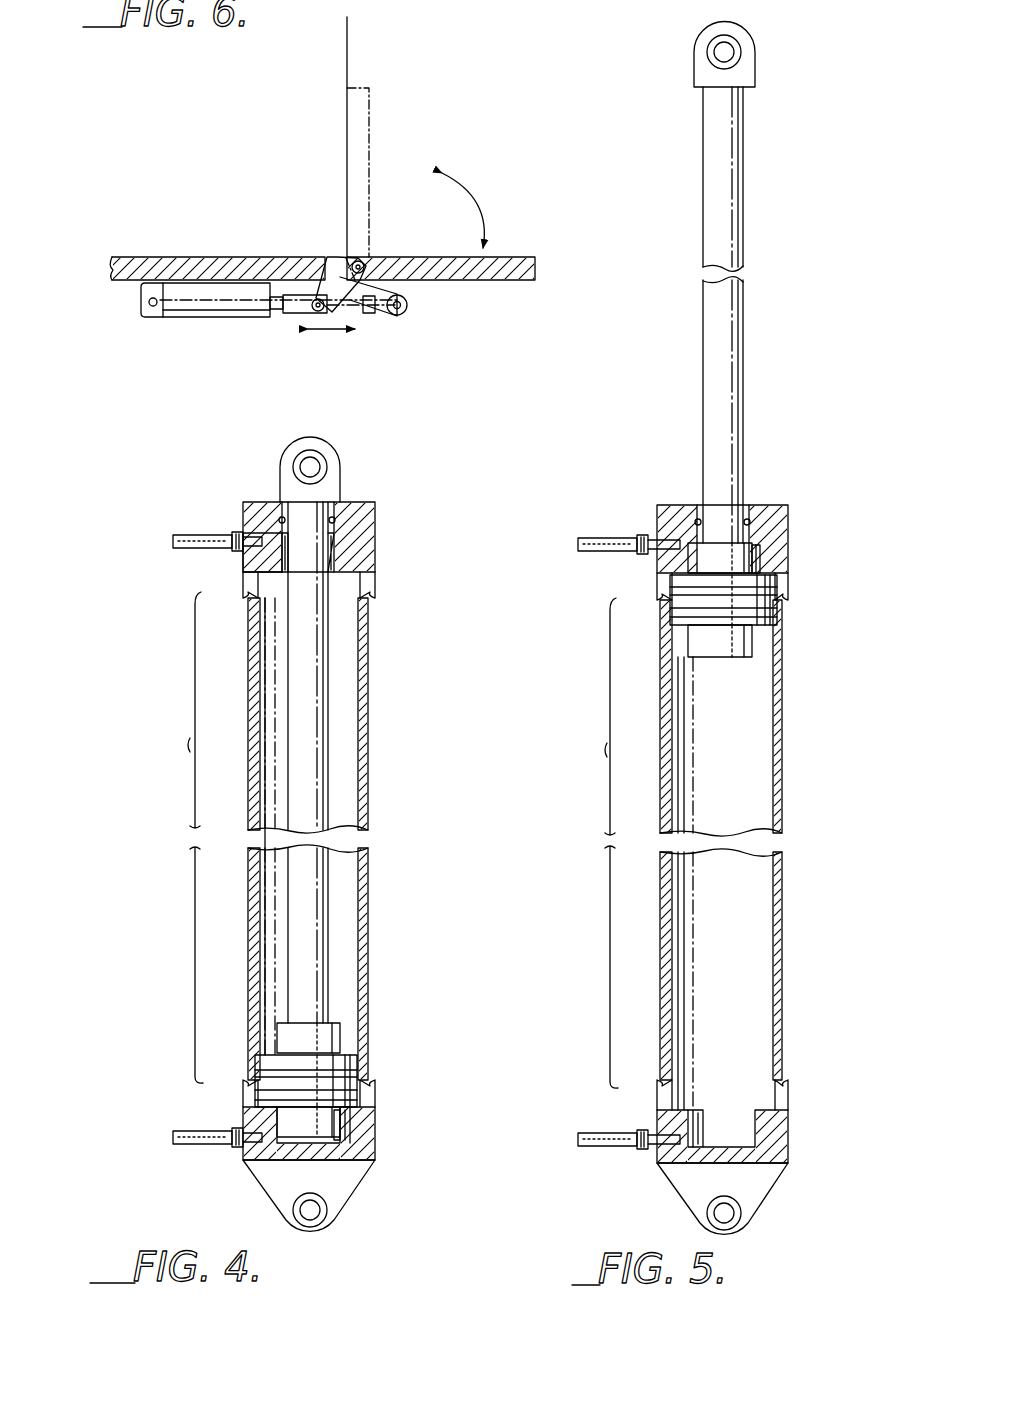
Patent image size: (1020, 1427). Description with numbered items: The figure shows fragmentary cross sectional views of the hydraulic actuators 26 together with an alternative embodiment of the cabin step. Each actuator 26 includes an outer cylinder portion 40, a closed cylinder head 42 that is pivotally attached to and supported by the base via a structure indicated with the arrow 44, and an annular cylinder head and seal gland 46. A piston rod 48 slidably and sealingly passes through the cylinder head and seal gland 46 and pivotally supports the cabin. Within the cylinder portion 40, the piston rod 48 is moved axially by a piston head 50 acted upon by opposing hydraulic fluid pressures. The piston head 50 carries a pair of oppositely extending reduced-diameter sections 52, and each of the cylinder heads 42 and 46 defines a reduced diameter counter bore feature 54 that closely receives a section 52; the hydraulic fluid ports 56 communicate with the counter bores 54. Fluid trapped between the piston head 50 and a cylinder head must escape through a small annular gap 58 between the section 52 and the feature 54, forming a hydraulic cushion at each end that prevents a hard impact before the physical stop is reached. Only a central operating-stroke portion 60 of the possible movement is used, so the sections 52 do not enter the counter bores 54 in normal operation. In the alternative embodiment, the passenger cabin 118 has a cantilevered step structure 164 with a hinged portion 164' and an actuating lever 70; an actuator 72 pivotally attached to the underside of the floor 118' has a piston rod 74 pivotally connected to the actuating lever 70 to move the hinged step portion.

In FIG. 4, the actuator 26 is at (300, 866).
In FIG. 5, the actuator 26 is at (714, 660).
In FIG. 4, the outer cylinder portion 40 is at (370, 850).
In FIG. 5, the outer cylinder portion 40 is at (784, 852).
In FIG. 4, the closed cylinder head 42 is at (372, 1152).
In FIG. 5, the closed cylinder head 42 is at (783, 1150).
In FIG. 4, the pivotal attachment structure 44 is at (342, 1206).
In FIG. 5, the pivotal attachment structure 44 is at (760, 1206).
In FIG. 4, the annular cylinder head and seal gland 46 is at (374, 532).
In FIG. 5, the annular cylinder head and seal gland 46 is at (775, 505).
In FIG. 4, the piston rod 48 is at (325, 698).
In FIG. 5, the piston rod 48 is at (745, 283).
In FIG. 4, the piston head 50 is at (355, 1072).
In FIG. 5, the piston head 50 is at (778, 600).
In FIG. 4, the reduced-diameter section 52 is at (340, 1040).
In FIG. 5, the reduced-diameter section 52 is at (690, 558).
In FIG. 4, the counter bore feature 54 is at (336, 553).
In FIG. 5, the counter bore feature 54 is at (752, 566).
In FIG. 4, the hydraulic fluid port 56 is at (268, 538).
In FIG. 5, the hydraulic fluid port 56 is at (680, 543).
In FIG. 4, the annular gap 58 is at (343, 1136).
In FIG. 5, the annular gap 58 is at (760, 556).
In FIG. 4, the operating-stroke portion 60 is at (175, 837).
In FIG. 5, the operating-stroke portion 60 is at (594, 843).
In FIG. 6, the actuating lever 70 is at (350, 262).
In FIG. 6, the actuator 72 is at (215, 318).
In FIG. 6, the piston rod 74 is at (278, 312).
In FIG. 6, the passenger cabin 118 is at (383, 137).
In FIG. 6, the floor 118' is at (217, 239).
In FIG. 6, the step structure 164 is at (500, 210).
In FIG. 6, the hinged step portion 164' is at (453, 253).